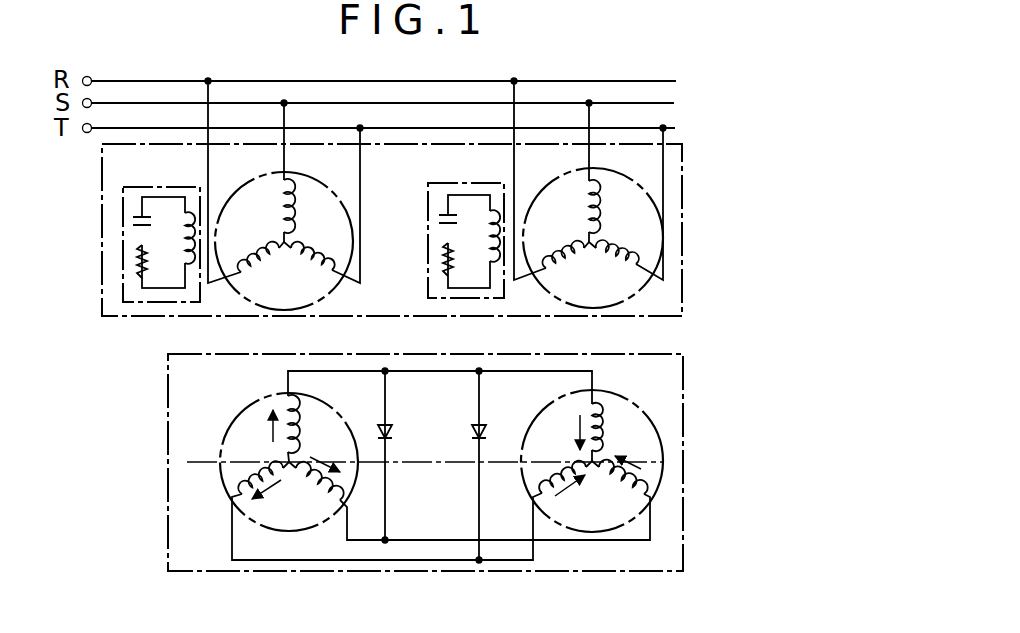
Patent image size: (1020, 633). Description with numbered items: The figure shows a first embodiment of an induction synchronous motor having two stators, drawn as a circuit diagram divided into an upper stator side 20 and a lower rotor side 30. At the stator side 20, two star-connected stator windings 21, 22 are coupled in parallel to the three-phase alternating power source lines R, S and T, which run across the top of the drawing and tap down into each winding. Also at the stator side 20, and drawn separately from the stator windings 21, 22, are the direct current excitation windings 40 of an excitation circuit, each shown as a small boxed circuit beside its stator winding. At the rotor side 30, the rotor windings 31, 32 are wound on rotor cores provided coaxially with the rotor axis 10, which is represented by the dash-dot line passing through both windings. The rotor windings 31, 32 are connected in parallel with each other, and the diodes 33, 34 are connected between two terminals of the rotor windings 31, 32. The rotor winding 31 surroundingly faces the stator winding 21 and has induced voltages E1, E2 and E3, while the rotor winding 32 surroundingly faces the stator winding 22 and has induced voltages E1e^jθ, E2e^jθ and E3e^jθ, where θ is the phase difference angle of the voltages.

The rotor axis 10 is at (207, 463).
The stator side 20 is at (683, 185).
The stator winding 21 is at (333, 184).
The stator winding 22 is at (577, 168).
The rotor side 30 is at (685, 418).
The rotor winding 31 is at (227, 438).
The rotor winding 32 is at (523, 440).
The diode 33 is at (380, 430).
The diode 34 is at (473, 435).
The direct current excitation winding 40 is at (183, 186).